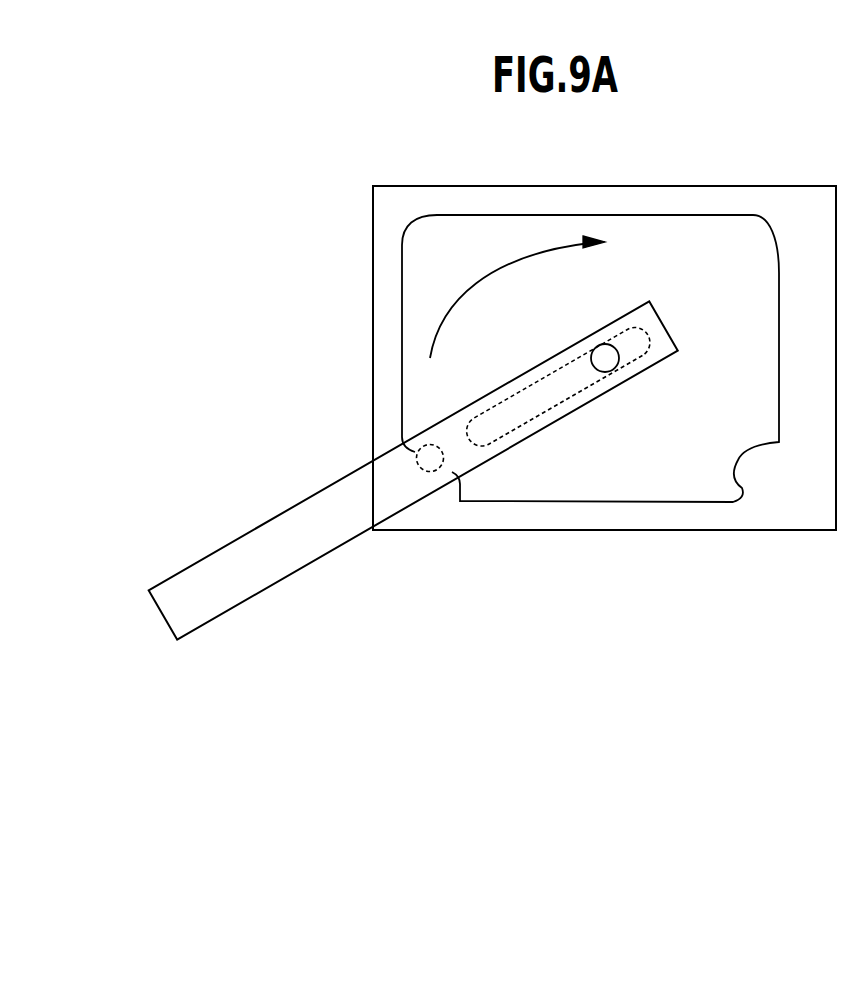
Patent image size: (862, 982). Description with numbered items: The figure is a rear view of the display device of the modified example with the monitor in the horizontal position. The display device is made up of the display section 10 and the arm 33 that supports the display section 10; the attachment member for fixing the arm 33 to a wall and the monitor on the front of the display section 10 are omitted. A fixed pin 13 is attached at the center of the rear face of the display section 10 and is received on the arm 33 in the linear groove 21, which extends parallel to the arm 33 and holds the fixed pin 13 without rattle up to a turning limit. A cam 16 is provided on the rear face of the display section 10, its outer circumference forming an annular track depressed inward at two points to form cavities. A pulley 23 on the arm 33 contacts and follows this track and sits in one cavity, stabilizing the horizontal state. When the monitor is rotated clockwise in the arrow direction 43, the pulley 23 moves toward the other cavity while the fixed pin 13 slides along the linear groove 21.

The display section 10 is at (373, 243).
The cam 16 is at (603, 215).
The arrow direction 43 is at (498, 266).
The arm 33 is at (308, 562).
The linear groove 21 is at (557, 403).
The fixed pin 13 is at (613, 368).
The pulley 23 is at (437, 470).